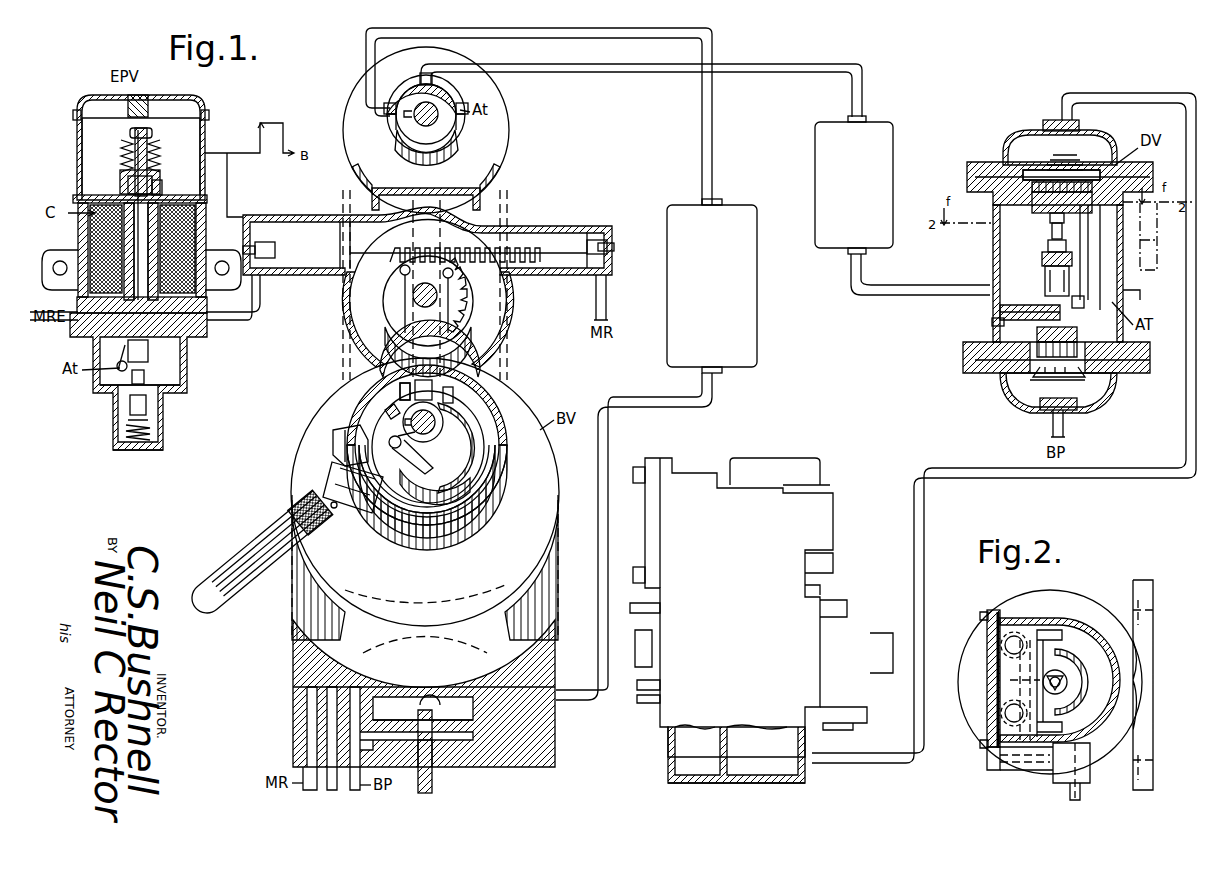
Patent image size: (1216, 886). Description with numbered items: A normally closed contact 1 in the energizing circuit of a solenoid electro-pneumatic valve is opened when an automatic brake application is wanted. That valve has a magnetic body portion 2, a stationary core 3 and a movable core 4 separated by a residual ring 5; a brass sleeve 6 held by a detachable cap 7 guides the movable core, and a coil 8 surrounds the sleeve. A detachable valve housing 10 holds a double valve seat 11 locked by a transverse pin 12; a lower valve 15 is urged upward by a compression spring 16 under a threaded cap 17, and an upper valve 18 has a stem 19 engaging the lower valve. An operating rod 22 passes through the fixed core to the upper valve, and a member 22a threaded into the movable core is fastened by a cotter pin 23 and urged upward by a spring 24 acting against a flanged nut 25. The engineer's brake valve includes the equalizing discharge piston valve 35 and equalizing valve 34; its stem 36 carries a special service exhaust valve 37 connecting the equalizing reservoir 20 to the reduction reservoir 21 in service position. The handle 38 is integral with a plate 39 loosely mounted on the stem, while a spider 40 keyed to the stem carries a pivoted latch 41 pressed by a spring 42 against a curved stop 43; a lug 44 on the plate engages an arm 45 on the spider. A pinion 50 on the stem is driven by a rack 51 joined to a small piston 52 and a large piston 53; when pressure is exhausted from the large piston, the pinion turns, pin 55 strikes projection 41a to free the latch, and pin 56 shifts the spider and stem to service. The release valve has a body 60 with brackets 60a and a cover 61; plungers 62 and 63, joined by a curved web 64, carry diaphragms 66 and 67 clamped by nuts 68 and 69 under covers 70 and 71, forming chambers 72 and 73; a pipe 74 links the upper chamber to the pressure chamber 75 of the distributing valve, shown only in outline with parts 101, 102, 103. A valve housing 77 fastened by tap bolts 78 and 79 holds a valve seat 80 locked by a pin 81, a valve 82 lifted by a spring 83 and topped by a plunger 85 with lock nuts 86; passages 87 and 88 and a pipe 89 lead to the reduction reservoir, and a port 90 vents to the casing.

In FIG. 1, the contact 1 is at (268, 122).
In FIG. 1, the body portion 2 is at (197, 232).
In FIG. 1, the stationary core 3 is at (180, 290).
In FIG. 1, the movable core 4 is at (178, 193).
In FIG. 1, the residual ring 5 is at (150, 252).
In FIG. 1, the sleeve 6 is at (126, 176).
In FIG. 1, the detachable cap 7 is at (176, 186).
In FIG. 1, the coil 8 is at (80, 200).
In FIG. 1, the valve housing 10 is at (186, 360).
In FIG. 1, the double valve seat 11 is at (180, 392).
In FIG. 1, the transverse pin or screw 12 is at (125, 384).
In FIG. 1, the valve 15 is at (150, 413).
In FIG. 1, the compression spring 16 is at (160, 438).
In FIG. 1, the threaded cap 17 is at (120, 448).
In FIG. 1, the valve 18 is at (125, 356).
In FIG. 1, the stem 19 is at (150, 381).
In FIG. 2, the stem 19 is at (1041, 628).
In FIG. 1, the equalizing reservoir 20 is at (745, 284).
In FIG. 1, the reducing reservoir 21 is at (886, 246).
In FIG. 1, the operating pin or rod 22 is at (125, 292).
In FIG. 1, the member 22a is at (126, 195).
In FIG. 1, the cotter pin 23 is at (162, 176).
In FIG. 1, the spring 24 is at (122, 152).
In FIG. 1, the flanged nut 25 is at (150, 135).
In FIG. 1, the equalizing valve 34 is at (432, 783).
In FIG. 1, the equalizing discharge piston valve 35 is at (473, 727).
In FIG. 1, the operating stem or shaft 36 is at (470, 170).
In FIG. 1, the special service exhaust valve 37 is at (447, 128).
In FIG. 1, the handle 38 is at (256, 597).
In FIG. 1, the plate 39 is at (365, 450).
In FIG. 1, the spider 40 is at (445, 422).
In FIG. 1, the latch 41 is at (400, 466).
In FIG. 1, the projection 41a is at (384, 413).
In FIG. 1, the spring 42 is at (437, 454).
In FIG. 1, the curved stop 43 is at (495, 430).
In FIG. 1, the lug 44 is at (445, 366).
In FIG. 1, the projecting arm 45 is at (402, 400).
In FIG. 1, the pinion 50 is at (470, 300).
In FIG. 1, the rack 51 is at (528, 232).
In FIG. 1, the small piston 52 is at (600, 218).
In FIG. 1, the large piston 53 is at (345, 215).
In FIG. 1, the pin 55 is at (400, 380).
In FIG. 1, the pin 56 is at (450, 396).
In FIG. 1, the body portion 60 is at (1140, 292).
In FIG. 2, the body portion 60 is at (1085, 622).
In FIG. 1, the supporting brackets 60a is at (1157, 240).
In FIG. 2, the supporting brackets 60a is at (1153, 584).
In FIG. 1, the detachable cover 61 is at (992, 277).
In FIG. 2, the detachable cover 61 is at (986, 640).
In FIG. 1, the plunger 62 is at (1082, 215).
In FIG. 1, the plunger 63 is at (1080, 335).
In FIG. 1, the curved web 64 is at (1088, 260).
In FIG. 2, the curved web 64 is at (1080, 660).
In FIG. 1, the flexible diaphragm 66 is at (1102, 170).
In FIG. 1, the flexible diaphragm 67 is at (1105, 380).
In FIG. 1, the clamp washers and nuts 68 is at (1072, 155).
In FIG. 1, the clamp washers and nuts 69 is at (1070, 400).
In FIG. 1, the cover 70 is at (1042, 128).
In FIG. 1, the cover 71 is at (1100, 395).
In FIG. 1, the upper chamber 72 is at (1020, 163).
In FIG. 1, the lower chamber 73 is at (1040, 393).
In FIG. 1, the pipe 74 is at (1188, 366).
In FIG. 1, the pressure chamber 75 is at (765, 770).
In FIG. 1, the valve housing 77 is at (1045, 282).
In FIG. 2, the valve housing 77 is at (1030, 684).
In FIG. 2, the tap bolt 78 is at (997, 615).
In FIG. 2, the tap bolt 79 is at (1005, 722).
In FIG. 1, the valve seat 80 is at (1000, 318).
In FIG. 1, the transverse screw or pin 81 is at (1084, 302).
In FIG. 1, the valve 82 is at (1048, 246).
In FIG. 1, the spring 83 is at (1042, 262).
In FIG. 1, the plunger 85 is at (1055, 224).
In FIG. 2, the plunger 85 is at (1046, 680).
In FIG. 1, the lock nuts 86 is at (1064, 232).
In FIG. 2, the passage 87 is at (1000, 703).
In FIG. 2, the passage 88 is at (1078, 758).
In FIG. 1, the pipe 89 is at (910, 296).
In FIG. 1, the port 90 is at (1115, 290).
In FIG. 1, the piston 101 is at (690, 768).
In FIG. 1, the valve body 102 is at (858, 668).
In FIG. 1, the cap 103 is at (822, 503).